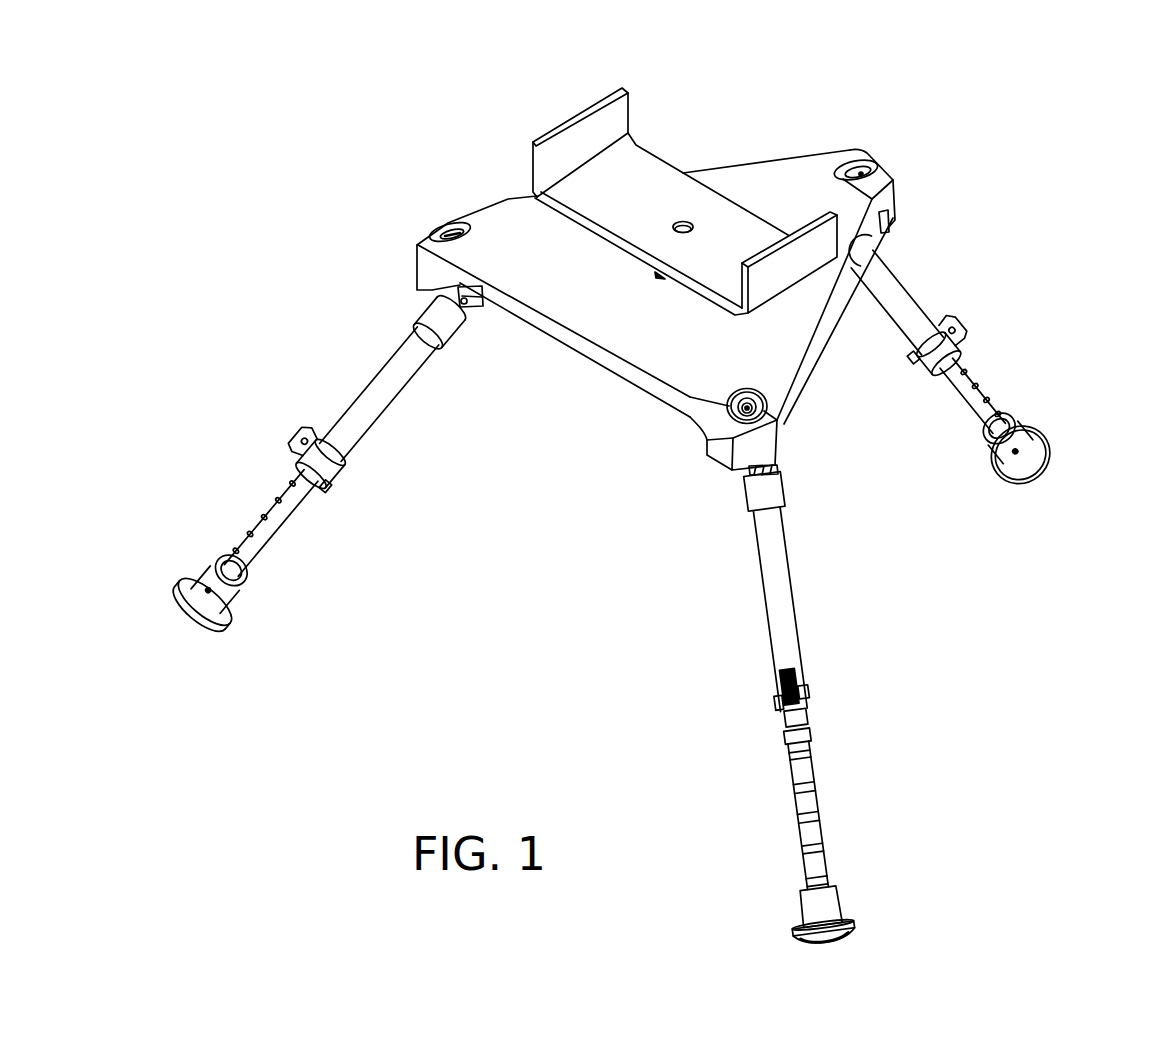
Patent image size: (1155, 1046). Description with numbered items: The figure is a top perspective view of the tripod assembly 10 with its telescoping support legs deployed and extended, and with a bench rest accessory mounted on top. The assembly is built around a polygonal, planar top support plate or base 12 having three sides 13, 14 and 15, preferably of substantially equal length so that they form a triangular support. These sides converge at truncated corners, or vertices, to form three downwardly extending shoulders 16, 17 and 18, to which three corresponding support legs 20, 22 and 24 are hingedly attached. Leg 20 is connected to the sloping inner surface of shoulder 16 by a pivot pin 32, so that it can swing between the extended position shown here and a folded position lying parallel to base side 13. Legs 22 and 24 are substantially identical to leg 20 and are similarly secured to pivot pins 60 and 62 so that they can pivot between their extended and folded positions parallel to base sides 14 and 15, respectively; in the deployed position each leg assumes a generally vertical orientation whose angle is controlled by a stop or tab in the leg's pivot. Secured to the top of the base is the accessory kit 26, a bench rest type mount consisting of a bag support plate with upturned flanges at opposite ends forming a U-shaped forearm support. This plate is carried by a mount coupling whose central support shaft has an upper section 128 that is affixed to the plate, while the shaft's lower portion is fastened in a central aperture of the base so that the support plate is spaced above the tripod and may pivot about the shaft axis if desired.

The tripod assembly 10 is at (1023, 166).
The top support plate 12 is at (613, 339).
The base side 13 is at (532, 310).
The base side 14 is at (833, 320).
The base side 15 is at (508, 198).
The shoulder 16 is at (415, 263).
The shoulder 17 is at (748, 452).
The shoulder 18 is at (891, 166).
The support leg 20 is at (390, 406).
The support leg 22 is at (789, 565).
The support leg 24 is at (905, 287).
The accessory kit 26 is at (647, 166).
The pivot pin 32 is at (440, 224).
The pivot pin 60 is at (768, 400).
The pivot pin 62 is at (849, 172).
The upper section of support shaft 128 is at (683, 220).